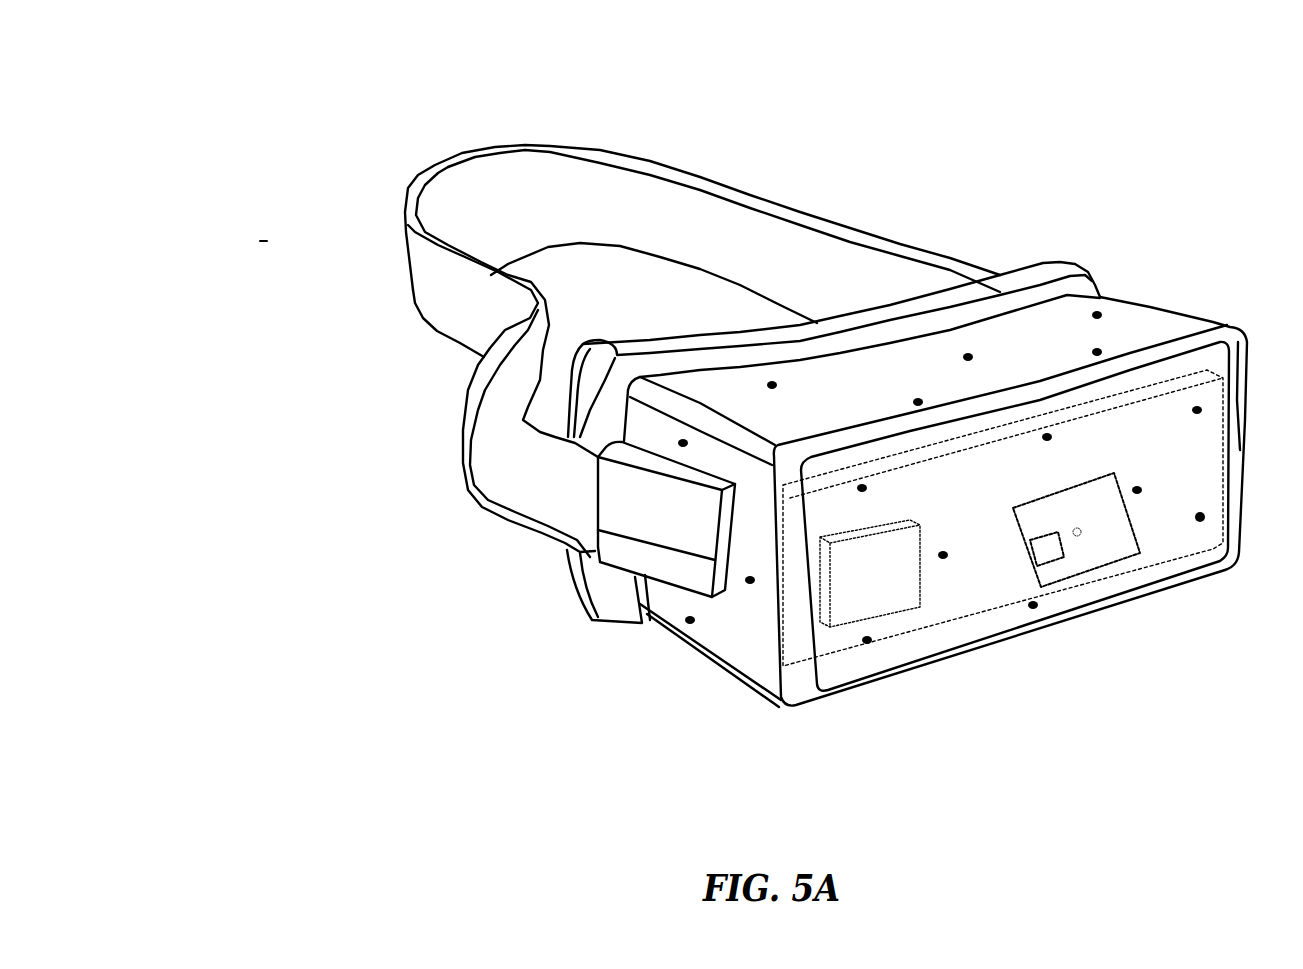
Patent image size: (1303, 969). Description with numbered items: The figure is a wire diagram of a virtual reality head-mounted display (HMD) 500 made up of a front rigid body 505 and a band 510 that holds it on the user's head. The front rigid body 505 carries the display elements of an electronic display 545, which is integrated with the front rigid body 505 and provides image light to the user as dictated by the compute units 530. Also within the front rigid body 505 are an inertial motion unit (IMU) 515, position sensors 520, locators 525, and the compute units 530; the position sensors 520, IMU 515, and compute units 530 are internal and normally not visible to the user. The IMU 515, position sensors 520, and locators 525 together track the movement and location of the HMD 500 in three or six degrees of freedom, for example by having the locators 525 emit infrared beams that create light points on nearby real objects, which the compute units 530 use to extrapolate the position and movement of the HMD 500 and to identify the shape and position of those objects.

The virtual reality head-mounted display (HMD) 500 is at (268, 114).
The front rigid body 505 is at (803, 707).
The band 510 is at (407, 278).
The inertial motion unit (IMU) 515 is at (1013, 528).
The position sensors 520 is at (1047, 551).
The locators 525 is at (911, 401).
The compute units 530 is at (874, 532).
The electronic display 545 is at (1224, 463).